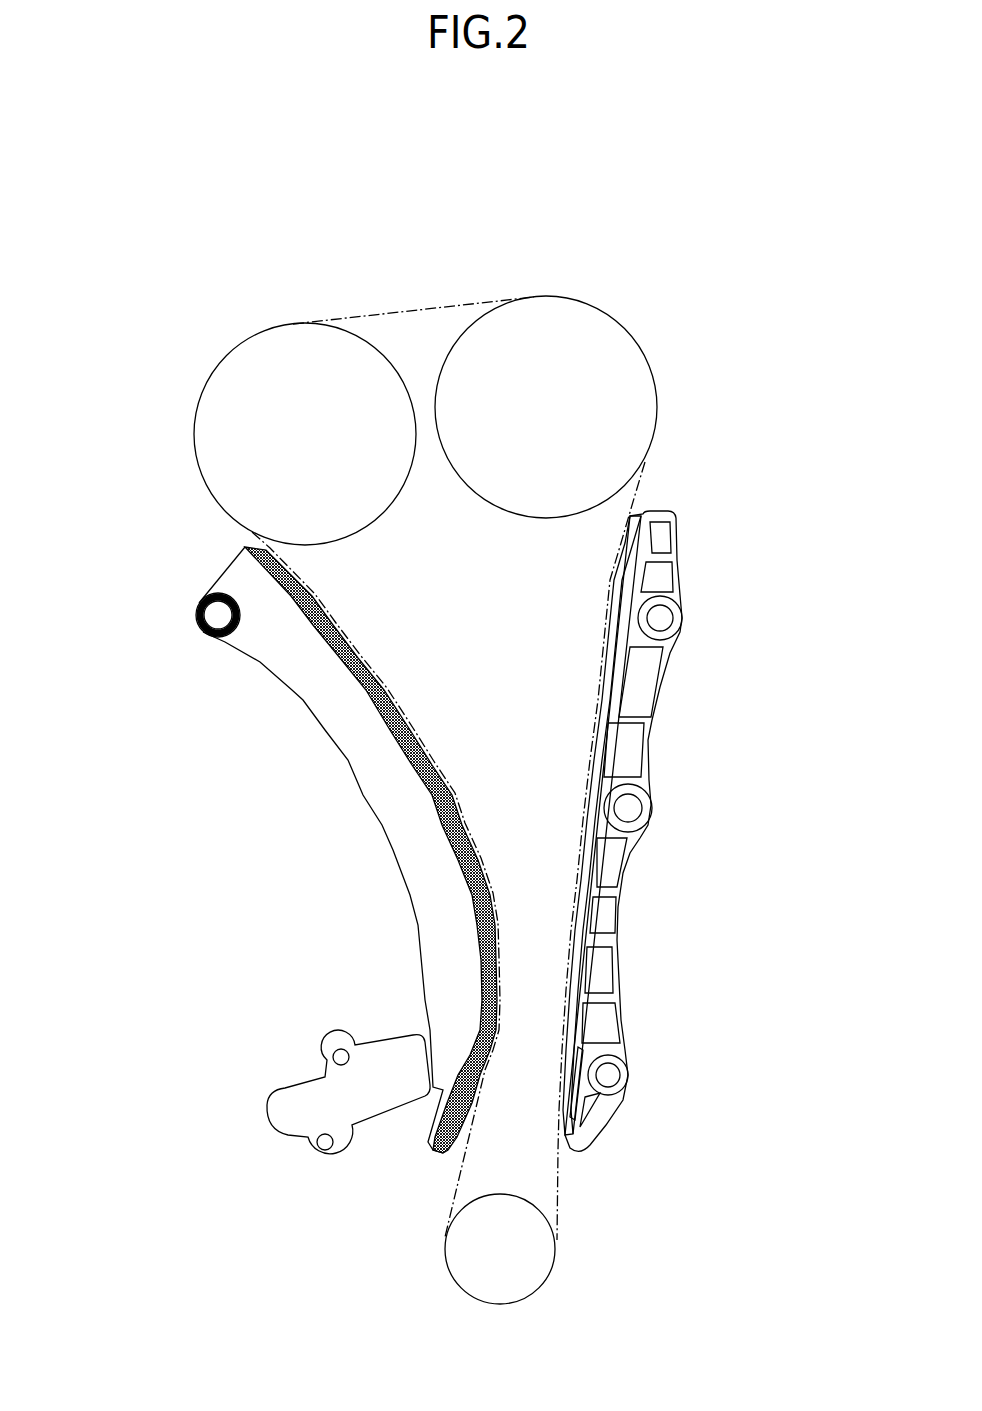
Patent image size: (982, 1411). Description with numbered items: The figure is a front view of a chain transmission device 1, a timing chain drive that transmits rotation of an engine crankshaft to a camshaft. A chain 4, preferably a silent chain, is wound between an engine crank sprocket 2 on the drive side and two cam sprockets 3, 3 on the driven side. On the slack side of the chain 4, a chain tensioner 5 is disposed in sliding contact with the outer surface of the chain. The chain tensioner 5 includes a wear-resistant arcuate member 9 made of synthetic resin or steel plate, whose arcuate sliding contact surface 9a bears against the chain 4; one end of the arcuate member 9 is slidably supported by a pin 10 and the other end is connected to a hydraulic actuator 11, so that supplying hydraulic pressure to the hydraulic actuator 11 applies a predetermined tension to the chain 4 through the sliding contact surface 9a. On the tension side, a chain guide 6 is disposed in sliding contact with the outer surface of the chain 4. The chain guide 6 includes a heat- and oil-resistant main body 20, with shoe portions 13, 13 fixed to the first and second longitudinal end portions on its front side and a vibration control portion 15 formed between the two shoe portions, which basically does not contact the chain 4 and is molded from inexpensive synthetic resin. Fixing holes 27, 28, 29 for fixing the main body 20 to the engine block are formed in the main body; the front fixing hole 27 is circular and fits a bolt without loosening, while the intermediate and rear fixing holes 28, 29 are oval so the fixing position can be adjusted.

The chain transmission device 1 is at (590, 158).
The engine crank sprocket 2 is at (466, 1254).
The cam sprocket 3 is at (272, 352).
The chain 4 is at (648, 470).
The chain tensioner 5 is at (293, 757).
The chain guide 6 is at (693, 736).
The arcuate member 9 is at (379, 806).
The arcuate sliding contact surface 9a is at (374, 668).
The pin 10 is at (204, 610).
The hydraulic actuator 11 is at (380, 1110).
The shoe portion 13 is at (618, 590).
The vibration control portion 15 is at (601, 735).
The main body 20 is at (641, 827).
The front fixing hole 27 is at (625, 1085).
The intermediate fixing hole 28 is at (645, 820).
The rear fixing hole 29 is at (671, 626).